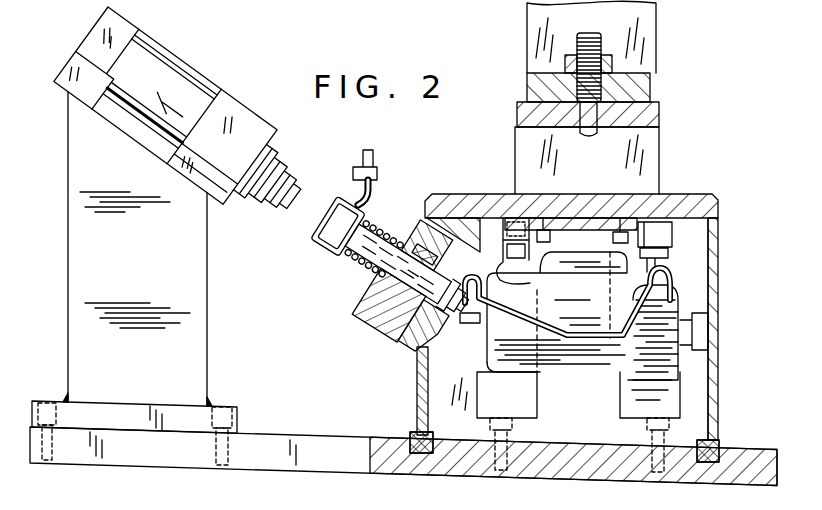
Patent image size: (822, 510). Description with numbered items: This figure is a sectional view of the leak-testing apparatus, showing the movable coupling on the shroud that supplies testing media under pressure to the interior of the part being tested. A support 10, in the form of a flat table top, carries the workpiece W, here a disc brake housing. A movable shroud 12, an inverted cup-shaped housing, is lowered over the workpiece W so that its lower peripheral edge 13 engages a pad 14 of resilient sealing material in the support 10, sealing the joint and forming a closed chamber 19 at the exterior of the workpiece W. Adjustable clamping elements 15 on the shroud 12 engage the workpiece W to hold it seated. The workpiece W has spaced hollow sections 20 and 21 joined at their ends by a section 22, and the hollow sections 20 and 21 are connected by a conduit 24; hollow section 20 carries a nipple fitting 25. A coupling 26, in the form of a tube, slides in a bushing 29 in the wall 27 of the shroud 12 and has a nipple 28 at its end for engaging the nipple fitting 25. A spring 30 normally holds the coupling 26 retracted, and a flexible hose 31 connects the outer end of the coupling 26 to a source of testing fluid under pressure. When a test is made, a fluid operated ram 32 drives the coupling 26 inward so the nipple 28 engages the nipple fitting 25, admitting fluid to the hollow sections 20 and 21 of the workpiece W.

The support 10 is at (757, 483).
The movable shroud 12 is at (720, 223).
The lower peripheral edge 13 is at (710, 443).
The pad 14 is at (723, 450).
The adjustable clamping elements 15 is at (663, 262).
The closed chamber 19 is at (695, 293).
The hollow section 20 is at (503, 370).
The hollow section 21 is at (652, 373).
The section 22 is at (597, 377).
The conduit 24 is at (630, 295).
The nipple fitting 25 is at (470, 343).
The coupling 26 is at (352, 279).
The wall 27 is at (380, 320).
The nipple 28 is at (410, 350).
The bushing 29 is at (403, 240).
The spring 30 is at (350, 256).
The flexible hose 31 is at (362, 156).
The fluid operated ram 32 is at (188, 78).
The workpiece W is at (677, 377).